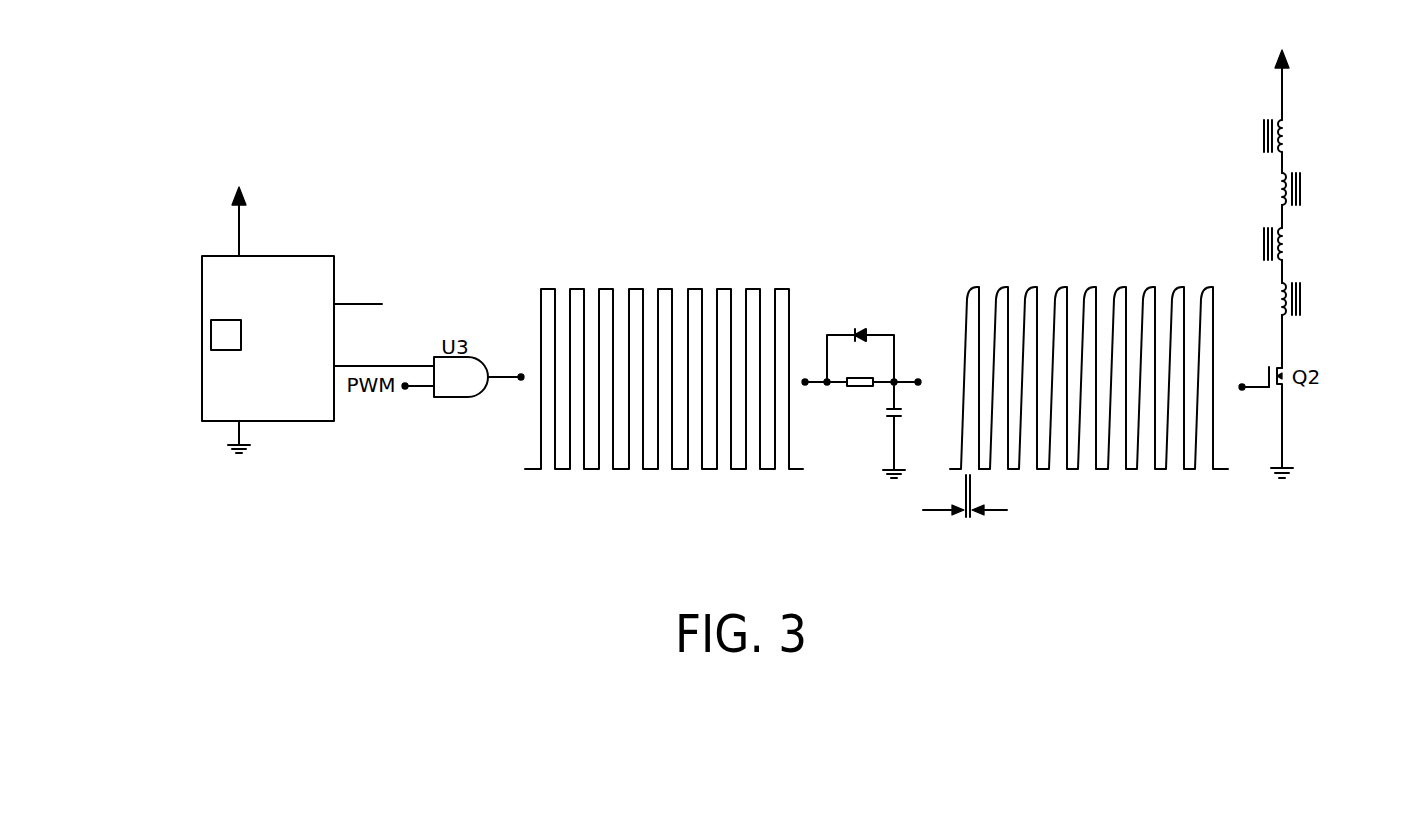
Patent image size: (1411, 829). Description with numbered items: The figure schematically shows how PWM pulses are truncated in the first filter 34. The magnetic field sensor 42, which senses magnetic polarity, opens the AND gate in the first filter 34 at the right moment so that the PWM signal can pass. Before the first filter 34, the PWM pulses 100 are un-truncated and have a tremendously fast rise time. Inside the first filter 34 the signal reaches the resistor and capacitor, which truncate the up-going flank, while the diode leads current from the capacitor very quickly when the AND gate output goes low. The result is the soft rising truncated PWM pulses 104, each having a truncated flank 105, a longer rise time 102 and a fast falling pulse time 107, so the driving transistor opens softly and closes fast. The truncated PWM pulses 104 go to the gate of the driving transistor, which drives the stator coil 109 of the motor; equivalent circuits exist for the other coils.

The magnetic field sensor 42 is at (197, 255).
The first filter 34 is at (1243, 347).
The PWM pulses 100 is at (663, 472).
The truncated PWM pulses 104 is at (1128, 475).
The truncated flank 105 is at (965, 373).
The fast falling pulse time 107 is at (985, 309).
The longer rise time 102 is at (965, 515).
The stator coil 109 is at (1248, 182).